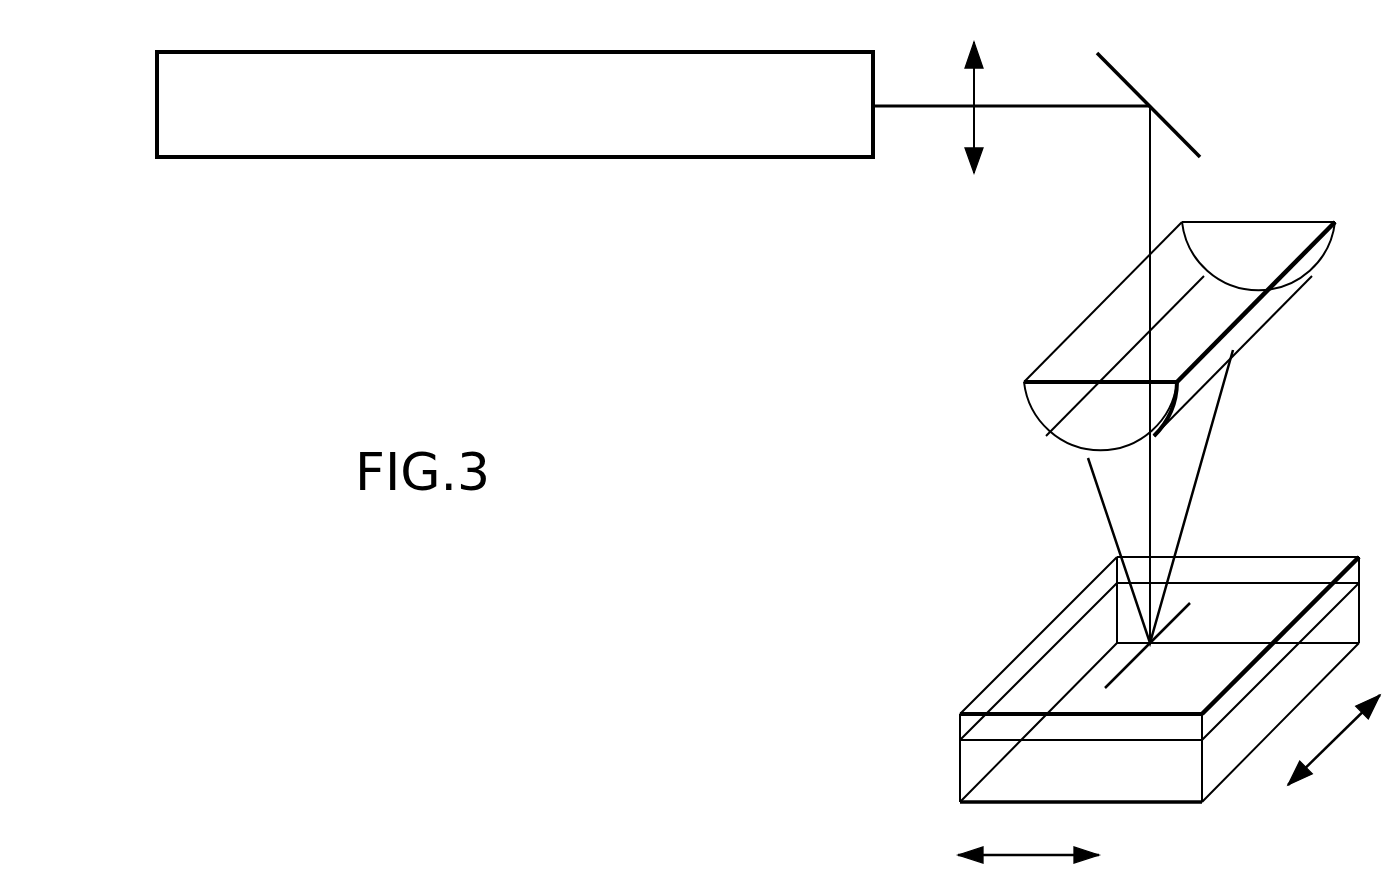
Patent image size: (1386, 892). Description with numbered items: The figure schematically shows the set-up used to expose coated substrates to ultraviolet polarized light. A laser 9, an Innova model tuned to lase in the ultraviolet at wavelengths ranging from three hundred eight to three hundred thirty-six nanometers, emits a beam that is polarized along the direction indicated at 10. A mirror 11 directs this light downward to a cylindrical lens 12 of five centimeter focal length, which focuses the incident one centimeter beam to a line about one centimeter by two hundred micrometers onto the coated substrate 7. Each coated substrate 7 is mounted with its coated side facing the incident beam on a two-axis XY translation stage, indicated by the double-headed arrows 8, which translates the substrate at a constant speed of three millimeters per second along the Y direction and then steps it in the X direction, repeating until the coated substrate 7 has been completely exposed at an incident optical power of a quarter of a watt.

The coated substrate 7 is at (1280, 582).
The double-headed arrows 8 is at (1333, 745).
The laser 9 is at (430, 158).
The polarization direction 10 is at (976, 158).
The mirror 11 is at (1145, 95).
The cylindrical lens 12 is at (1297, 233).